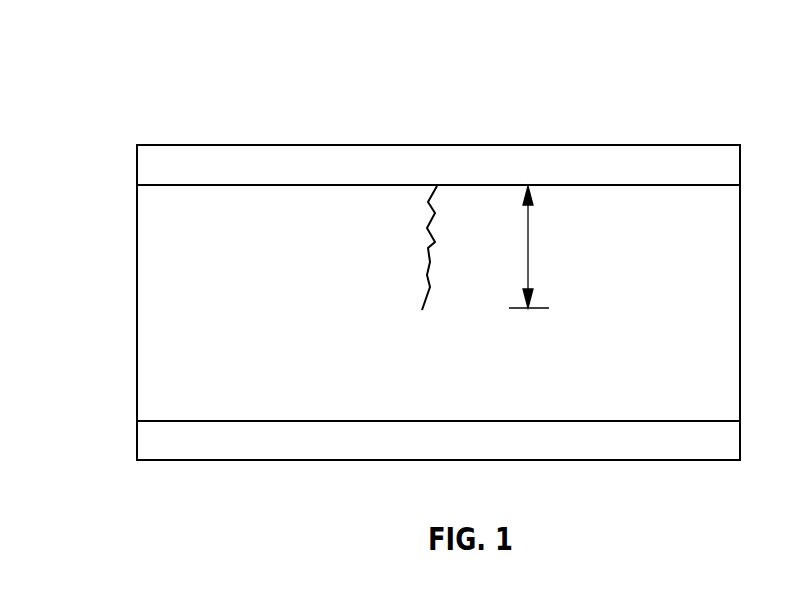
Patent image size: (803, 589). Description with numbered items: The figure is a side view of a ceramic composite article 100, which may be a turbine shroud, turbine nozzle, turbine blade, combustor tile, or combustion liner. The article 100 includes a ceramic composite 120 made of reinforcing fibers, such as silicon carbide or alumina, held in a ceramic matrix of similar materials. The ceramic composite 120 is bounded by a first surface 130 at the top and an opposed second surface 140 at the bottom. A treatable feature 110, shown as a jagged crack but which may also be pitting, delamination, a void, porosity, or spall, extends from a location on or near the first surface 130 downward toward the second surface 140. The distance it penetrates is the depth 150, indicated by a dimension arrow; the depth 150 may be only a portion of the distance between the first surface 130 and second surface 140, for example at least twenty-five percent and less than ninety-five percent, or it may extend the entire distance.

The ceramic composite article 100 is at (152, 66).
The treatable feature 110 is at (428, 240).
The ceramic composite 120 is at (183, 316).
The first surface 130 is at (183, 170).
The second surface 140 is at (183, 443).
The depth 150 is at (529, 248).